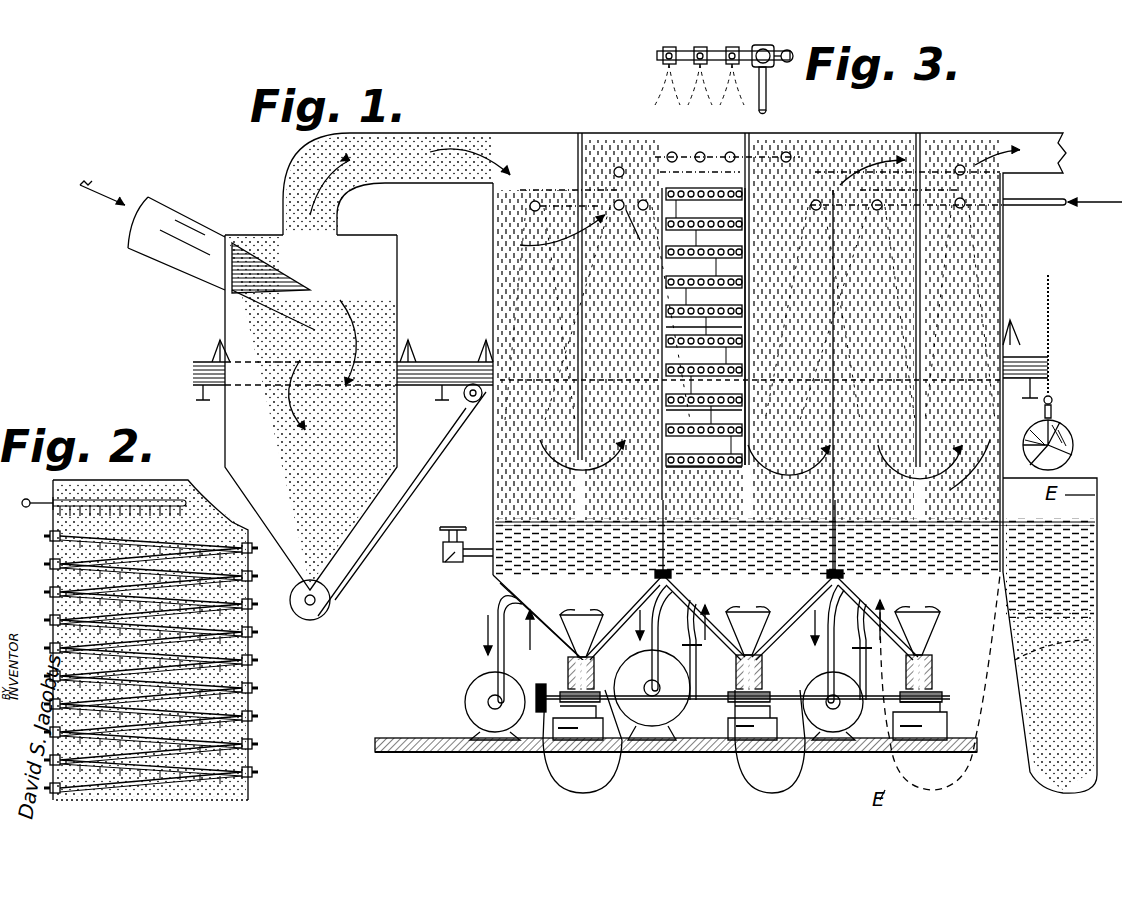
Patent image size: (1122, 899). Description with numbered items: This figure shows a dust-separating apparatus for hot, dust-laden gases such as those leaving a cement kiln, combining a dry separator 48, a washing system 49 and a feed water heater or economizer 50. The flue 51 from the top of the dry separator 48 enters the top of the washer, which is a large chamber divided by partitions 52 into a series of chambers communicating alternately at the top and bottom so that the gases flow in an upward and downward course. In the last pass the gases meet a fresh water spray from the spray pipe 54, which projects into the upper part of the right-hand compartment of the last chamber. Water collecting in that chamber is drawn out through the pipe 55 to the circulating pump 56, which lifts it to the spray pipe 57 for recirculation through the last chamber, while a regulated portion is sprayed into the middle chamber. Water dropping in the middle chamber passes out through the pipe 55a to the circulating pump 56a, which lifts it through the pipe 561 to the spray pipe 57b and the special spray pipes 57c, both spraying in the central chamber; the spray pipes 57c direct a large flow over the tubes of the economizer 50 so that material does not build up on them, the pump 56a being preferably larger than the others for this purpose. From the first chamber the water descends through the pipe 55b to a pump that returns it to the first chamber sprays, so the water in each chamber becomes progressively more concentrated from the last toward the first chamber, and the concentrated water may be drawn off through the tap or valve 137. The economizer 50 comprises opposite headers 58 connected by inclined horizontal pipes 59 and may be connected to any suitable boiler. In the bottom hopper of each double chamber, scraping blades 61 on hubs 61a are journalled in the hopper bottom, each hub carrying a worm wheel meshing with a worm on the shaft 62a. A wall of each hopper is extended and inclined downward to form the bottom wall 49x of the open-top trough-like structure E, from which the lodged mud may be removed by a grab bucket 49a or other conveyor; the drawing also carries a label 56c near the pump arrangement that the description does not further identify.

In FIG. 1, the dry separator 48 is at (385, 292).
In FIG. 1, the washing system 49 is at (775, 145).
In FIG. 1, the grab bucket 49a is at (1068, 440).
In FIG. 1, the bottom wall 49x is at (1035, 775).
In FIG. 1, the feed water heater 50 is at (716, 150).
In FIG. 2, the feed water heater 50 is at (150, 482).
In FIG. 1, the flue 51 is at (432, 139).
In FIG. 1, the partitions 52 is at (580, 142).
In FIG. 1, the spray pipe 54 is at (1018, 206).
In FIG. 1, the pipe 55 is at (828, 668).
In FIG. 1, the pipe 55a is at (648, 640).
In FIG. 1, the pipe 55b is at (490, 622).
In FIG. 1, the circulating pump 56 is at (818, 730).
In FIG. 1, the circulating pump 56a is at (664, 738).
In FIG. 1, the spray nozzle connection 56c is at (625, 233).
In FIG. 1, the pipe 561 is at (466, 695).
In FIG. 1, the spray pipe 57 is at (958, 165).
In FIG. 1, the spray pipe 57b is at (835, 190).
In FIG. 3, the spray pipe 57b is at (772, 100).
In FIG. 2, the spray pipes 57c is at (40, 500).
In FIG. 3, the spray pipes 57c is at (660, 50).
In FIG. 1, the headers 58 is at (672, 335).
In FIG. 2, the headers 58 is at (50, 570).
In FIG. 1, the inclined horizontal pipes 59 is at (672, 420).
In FIG. 2, the inclined horizontal pipes 59 is at (65, 545).
In FIG. 1, the scraping blades 61 is at (572, 640).
In FIG. 1, the hubs 61a is at (906, 672).
In FIG. 1, the shaft 62a is at (725, 694).
In FIG. 1, the tap or valve 137 is at (448, 565).